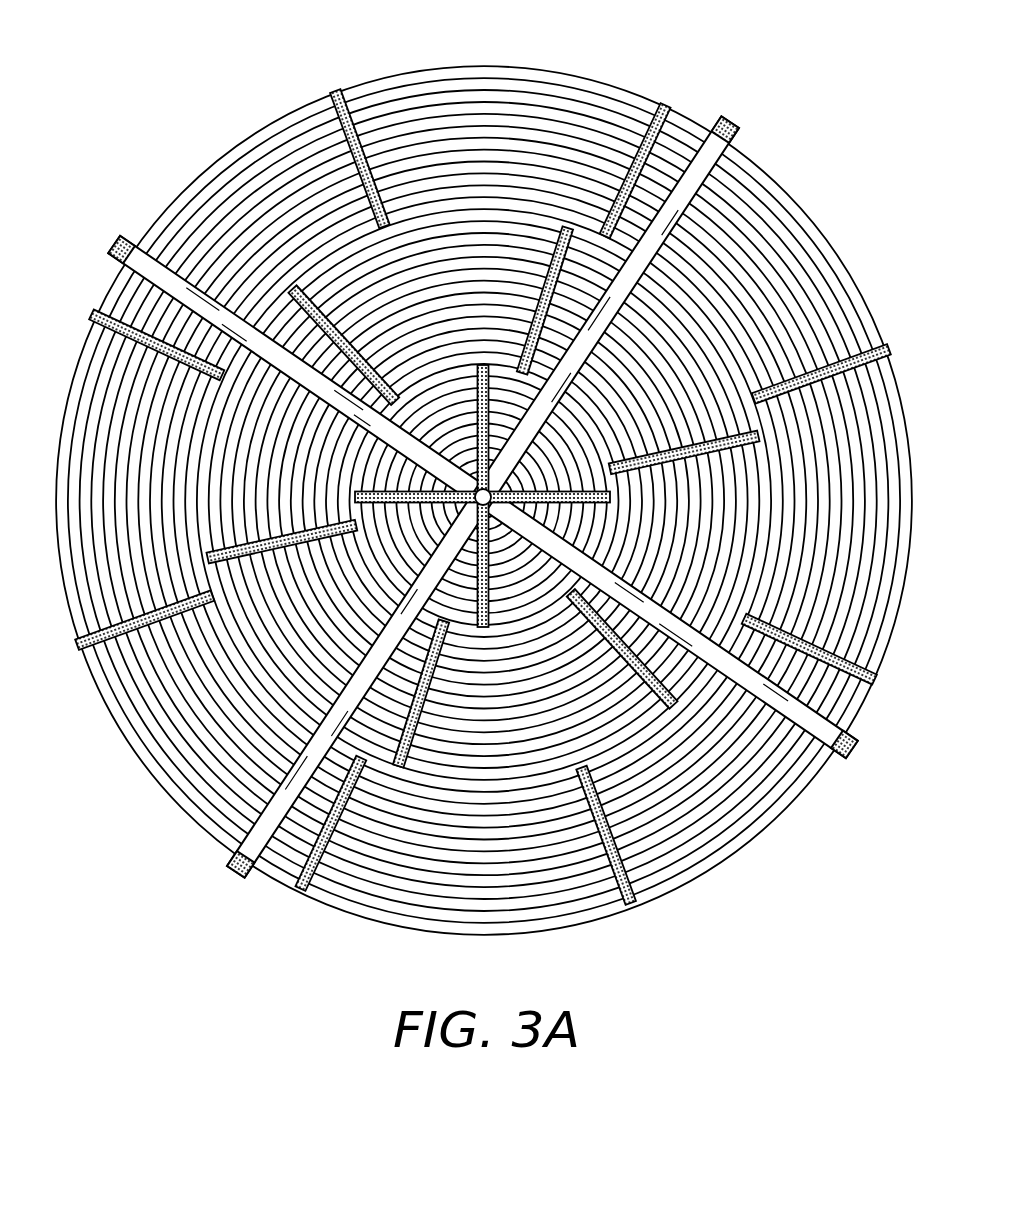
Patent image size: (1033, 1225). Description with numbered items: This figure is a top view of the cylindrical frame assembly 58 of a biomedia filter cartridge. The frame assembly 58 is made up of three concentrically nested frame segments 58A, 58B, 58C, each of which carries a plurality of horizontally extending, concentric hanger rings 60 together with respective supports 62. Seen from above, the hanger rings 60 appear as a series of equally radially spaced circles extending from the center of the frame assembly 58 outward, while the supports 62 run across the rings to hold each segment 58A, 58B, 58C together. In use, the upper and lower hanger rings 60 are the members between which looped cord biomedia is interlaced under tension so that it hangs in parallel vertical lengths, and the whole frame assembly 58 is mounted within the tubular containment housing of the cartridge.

The cylindrical frame assembly 58 is at (484, 474).
The frame segment 58A is at (540, 135).
The frame segment 58B is at (568, 290).
The frame segment 58C is at (498, 402).
The hanger rings 60 is at (405, 93).
The supports 62 is at (472, 367).